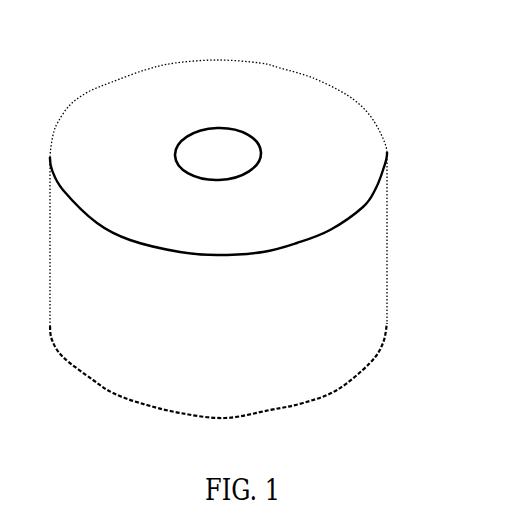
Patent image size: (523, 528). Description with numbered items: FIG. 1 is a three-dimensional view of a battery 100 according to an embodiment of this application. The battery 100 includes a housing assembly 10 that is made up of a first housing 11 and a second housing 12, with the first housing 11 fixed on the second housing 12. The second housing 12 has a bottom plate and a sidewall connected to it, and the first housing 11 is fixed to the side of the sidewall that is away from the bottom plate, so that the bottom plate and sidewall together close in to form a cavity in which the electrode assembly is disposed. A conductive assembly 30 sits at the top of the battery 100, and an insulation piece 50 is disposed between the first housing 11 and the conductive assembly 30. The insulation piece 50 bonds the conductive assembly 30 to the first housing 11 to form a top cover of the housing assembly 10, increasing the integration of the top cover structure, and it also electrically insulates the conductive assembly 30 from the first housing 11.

The battery 100 is at (199, 20).
The housing assembly 10 is at (420, 118).
The first housing 11 is at (372, 145).
The second housing 12 is at (386, 196).
The conductive assembly 30 is at (235, 132).
The insulation piece 50 is at (178, 148).